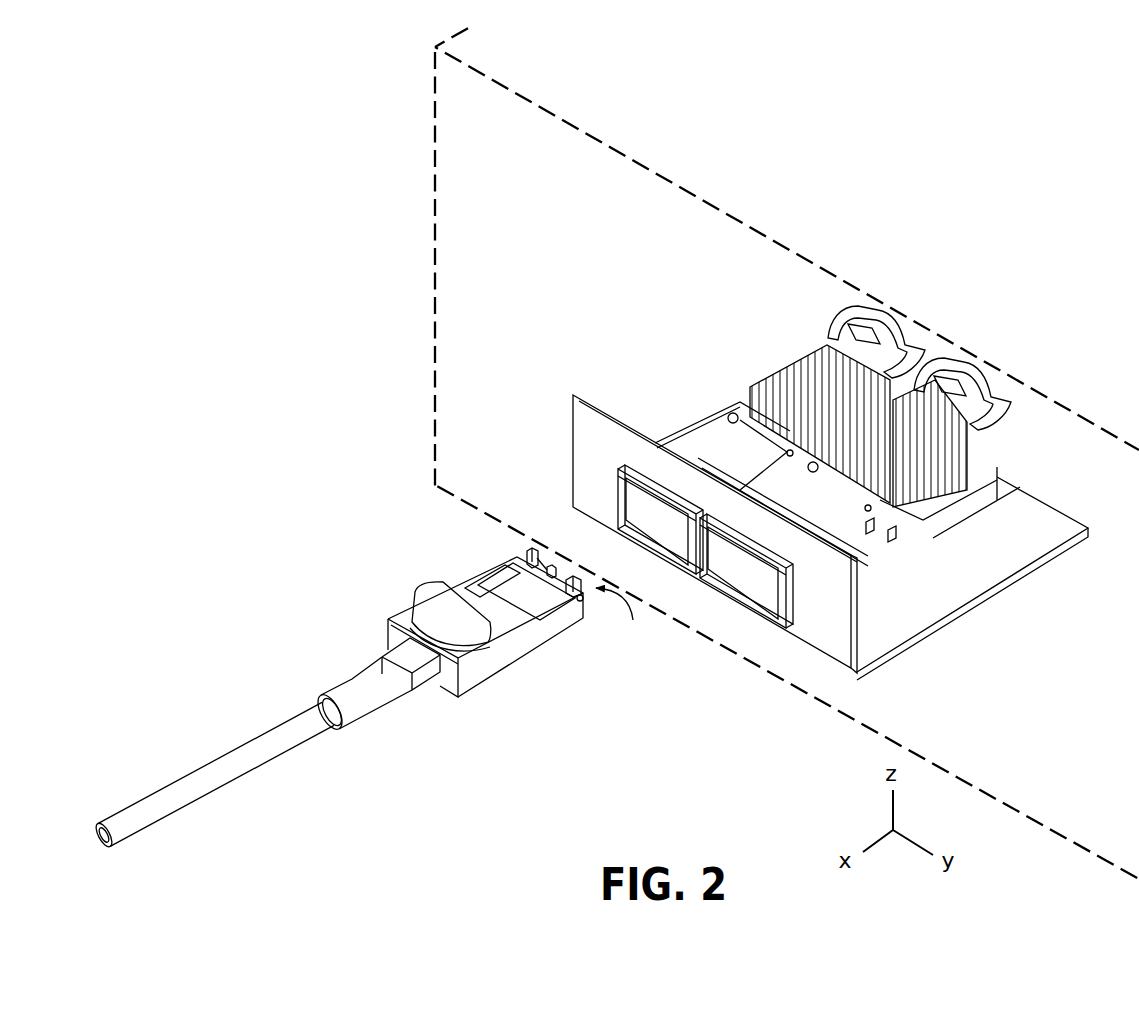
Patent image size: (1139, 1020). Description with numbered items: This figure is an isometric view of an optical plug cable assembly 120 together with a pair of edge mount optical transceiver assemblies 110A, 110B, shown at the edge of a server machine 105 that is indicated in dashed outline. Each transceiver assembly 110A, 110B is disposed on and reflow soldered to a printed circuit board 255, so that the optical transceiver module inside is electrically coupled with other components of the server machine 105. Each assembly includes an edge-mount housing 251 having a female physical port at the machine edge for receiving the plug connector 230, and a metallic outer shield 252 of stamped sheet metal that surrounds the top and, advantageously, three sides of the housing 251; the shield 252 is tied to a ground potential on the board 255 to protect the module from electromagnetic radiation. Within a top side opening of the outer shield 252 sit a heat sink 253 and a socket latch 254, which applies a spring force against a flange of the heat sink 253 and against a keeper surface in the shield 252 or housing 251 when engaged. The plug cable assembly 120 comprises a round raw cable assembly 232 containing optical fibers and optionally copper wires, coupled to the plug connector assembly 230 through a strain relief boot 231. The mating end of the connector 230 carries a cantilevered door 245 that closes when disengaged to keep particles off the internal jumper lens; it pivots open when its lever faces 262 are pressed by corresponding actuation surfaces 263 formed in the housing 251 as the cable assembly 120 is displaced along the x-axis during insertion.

The server machine 105 is at (435, 204).
The edge mount optical transceiver assembly 110A is at (695, 400).
The edge mount optical transceiver assembly 110B is at (921, 566).
The optical plug cable assembly 120 is at (312, 626).
The plug connector assembly 230 is at (466, 571).
The strain relief boot 231 is at (405, 707).
The raw cable assembly 232 is at (250, 776).
The cantilevered door 245 is at (624, 618).
The edge-mount housing 251 is at (733, 606).
The metallic outer shield 252 is at (683, 430).
The heat sink 253 is at (795, 354).
The socket latch 254 is at (901, 316).
The printed circuit board 255 is at (972, 578).
The lever faces 262 is at (543, 550).
The actuation surfaces 263 is at (620, 498).